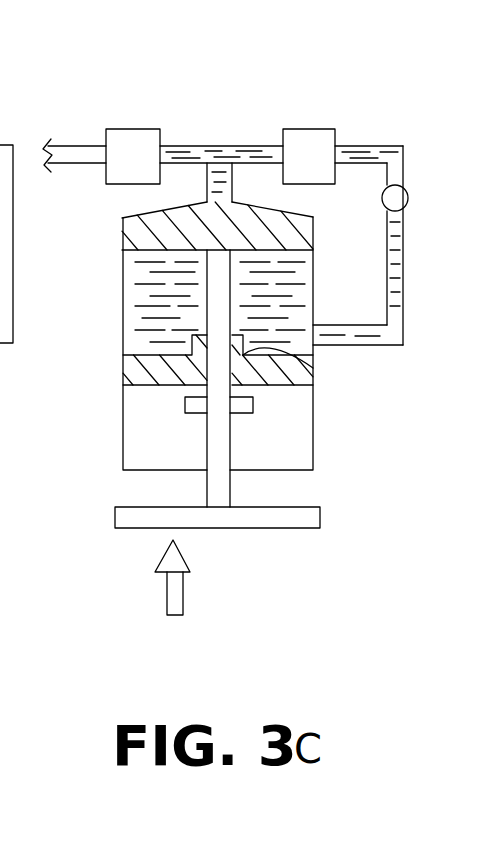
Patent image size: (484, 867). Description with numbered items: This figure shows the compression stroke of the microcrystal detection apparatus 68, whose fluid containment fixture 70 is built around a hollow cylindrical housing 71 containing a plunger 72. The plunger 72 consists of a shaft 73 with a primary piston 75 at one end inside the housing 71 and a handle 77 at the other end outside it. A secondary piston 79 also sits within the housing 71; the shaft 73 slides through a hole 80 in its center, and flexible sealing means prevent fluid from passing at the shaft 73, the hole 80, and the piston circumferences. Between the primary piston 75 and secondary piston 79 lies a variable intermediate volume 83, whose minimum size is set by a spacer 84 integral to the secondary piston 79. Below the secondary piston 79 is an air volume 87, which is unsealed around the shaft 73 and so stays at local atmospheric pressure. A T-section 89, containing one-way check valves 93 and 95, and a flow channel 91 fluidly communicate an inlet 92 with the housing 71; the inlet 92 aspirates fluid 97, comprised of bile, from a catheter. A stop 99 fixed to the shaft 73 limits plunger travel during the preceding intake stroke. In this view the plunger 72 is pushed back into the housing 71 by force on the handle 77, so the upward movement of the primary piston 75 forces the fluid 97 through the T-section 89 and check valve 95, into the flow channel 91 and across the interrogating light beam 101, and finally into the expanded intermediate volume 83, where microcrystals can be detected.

The microcrystal detection apparatus 68 is at (216, 91).
The fluid containment fixture 70 is at (67, 446).
The hollow cylindrical housing 71 is at (313, 447).
The plunger 72 is at (257, 547).
The shaft 73 is at (205, 495).
The primary piston 75 is at (137, 231).
The handle 77 is at (115, 507).
The secondary piston 79 is at (137, 368).
The hole 80 is at (203, 378).
The variable intermediate volume 83 is at (137, 304).
The spacer 84 is at (313, 360).
The air volume 87 is at (172, 461).
The T-section 89 is at (176, 149).
The flow channel 91 is at (365, 148).
The inlet 92 is at (74, 146).
The one-way check valve 93 is at (148, 169).
The one-way check valve 95 is at (326, 169).
The fluid 97 is at (231, 150).
The stop 99 is at (253, 405).
The interrogating light beam 101 is at (396, 201).